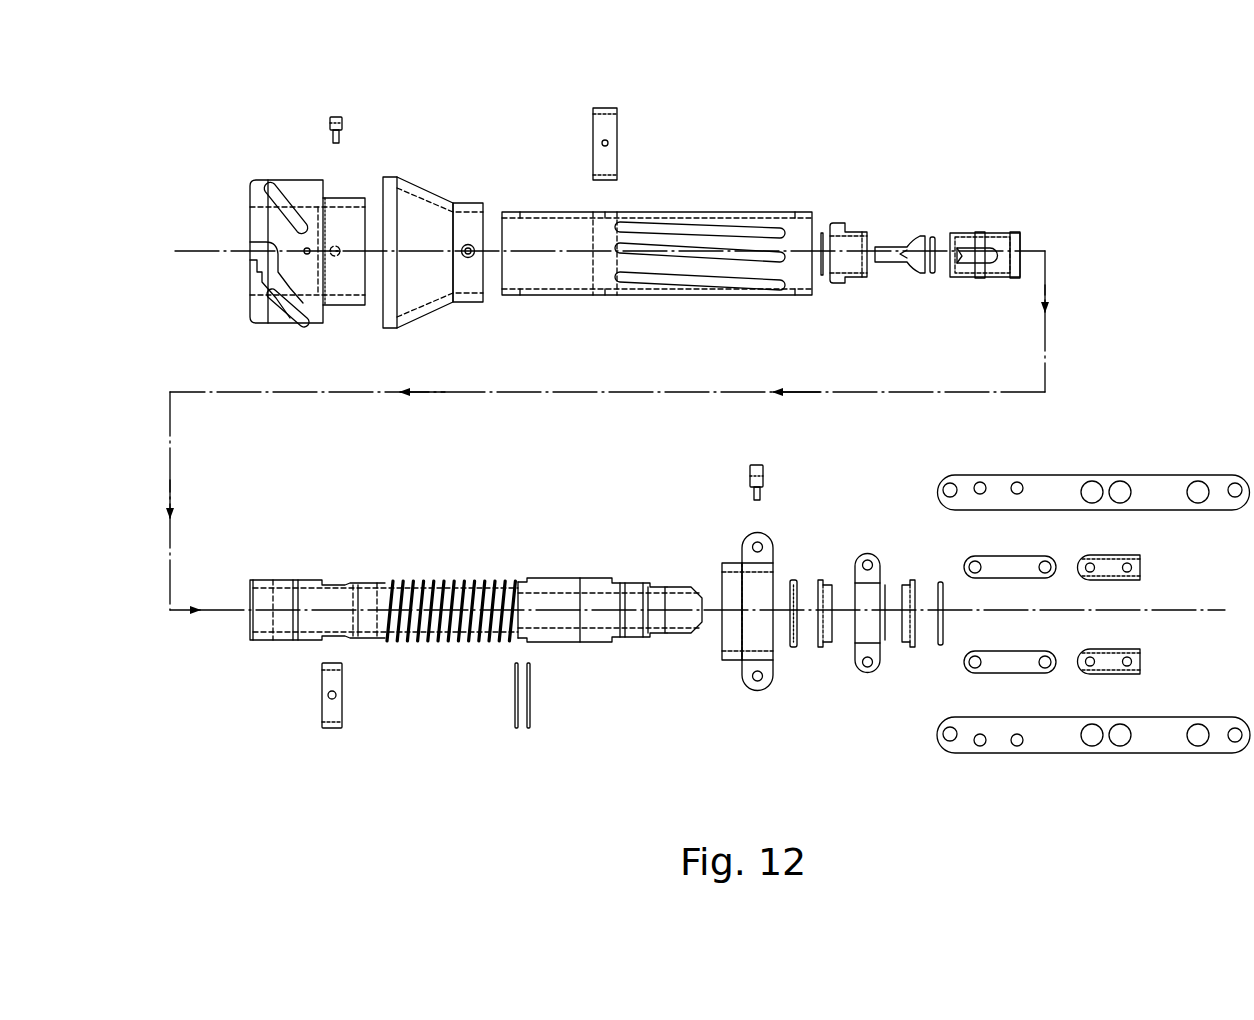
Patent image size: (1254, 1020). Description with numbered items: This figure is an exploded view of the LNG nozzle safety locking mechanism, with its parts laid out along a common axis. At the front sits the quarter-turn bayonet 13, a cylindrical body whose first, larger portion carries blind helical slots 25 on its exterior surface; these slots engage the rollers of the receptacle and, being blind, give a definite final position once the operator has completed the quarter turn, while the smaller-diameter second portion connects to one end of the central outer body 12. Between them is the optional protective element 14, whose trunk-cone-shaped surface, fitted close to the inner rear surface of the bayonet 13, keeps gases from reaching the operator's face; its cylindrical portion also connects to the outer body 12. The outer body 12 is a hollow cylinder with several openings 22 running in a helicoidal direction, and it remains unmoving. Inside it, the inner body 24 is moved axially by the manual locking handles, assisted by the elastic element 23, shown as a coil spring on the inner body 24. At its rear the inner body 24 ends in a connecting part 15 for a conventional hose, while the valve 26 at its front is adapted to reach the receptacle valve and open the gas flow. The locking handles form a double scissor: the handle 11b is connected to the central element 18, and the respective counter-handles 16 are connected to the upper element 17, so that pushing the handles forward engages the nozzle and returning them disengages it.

The handle 11b is at (1142, 483).
The central outer body 12 is at (645, 192).
The quarter-turn bayonet 13 is at (209, 172).
The protective element 14 is at (410, 172).
The connecting part 15 is at (683, 586).
The counter-handle 16 is at (976, 556).
The upper element 17 is at (845, 666).
The central element 18 is at (727, 681).
The openings 22 is at (748, 283).
The elastic element 23 is at (409, 578).
The inner body 24 is at (525, 556).
The helical slots 25 is at (277, 215).
The valve 26 is at (897, 235).